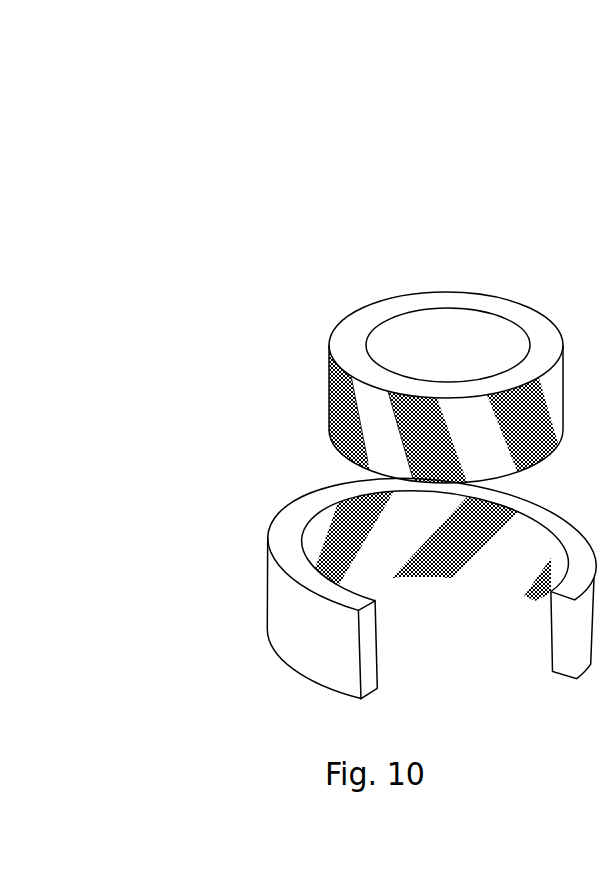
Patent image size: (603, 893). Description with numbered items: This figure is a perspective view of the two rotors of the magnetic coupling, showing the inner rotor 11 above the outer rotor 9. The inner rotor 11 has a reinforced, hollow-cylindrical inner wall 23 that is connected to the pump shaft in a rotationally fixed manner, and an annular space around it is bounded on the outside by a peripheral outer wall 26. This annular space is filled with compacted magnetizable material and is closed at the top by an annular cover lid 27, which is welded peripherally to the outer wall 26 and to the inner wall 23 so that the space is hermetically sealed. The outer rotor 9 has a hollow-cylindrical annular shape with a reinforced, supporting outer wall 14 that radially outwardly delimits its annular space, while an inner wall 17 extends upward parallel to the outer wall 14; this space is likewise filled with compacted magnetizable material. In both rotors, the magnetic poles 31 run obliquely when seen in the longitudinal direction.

The outer rotor 9 is at (374, 646).
The inner rotor 11 is at (398, 266).
The outer wall 14 is at (273, 621).
The inner wall 17 is at (490, 573).
The inner wall 23 is at (468, 342).
The outer wall 26 is at (372, 397).
The annular cover lid 27 is at (420, 300).
The magnetic poles 31 is at (340, 417).